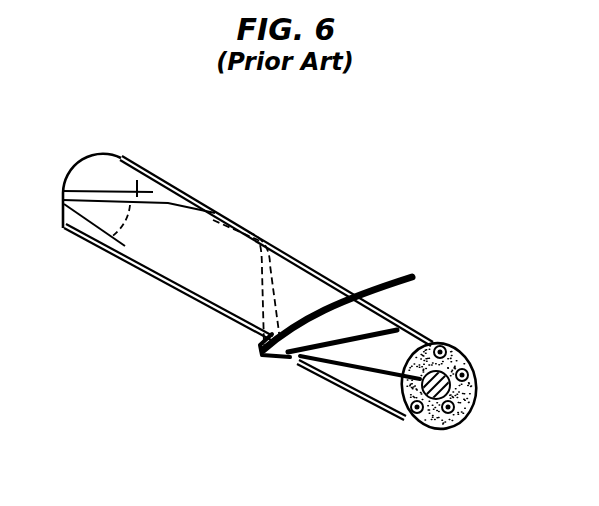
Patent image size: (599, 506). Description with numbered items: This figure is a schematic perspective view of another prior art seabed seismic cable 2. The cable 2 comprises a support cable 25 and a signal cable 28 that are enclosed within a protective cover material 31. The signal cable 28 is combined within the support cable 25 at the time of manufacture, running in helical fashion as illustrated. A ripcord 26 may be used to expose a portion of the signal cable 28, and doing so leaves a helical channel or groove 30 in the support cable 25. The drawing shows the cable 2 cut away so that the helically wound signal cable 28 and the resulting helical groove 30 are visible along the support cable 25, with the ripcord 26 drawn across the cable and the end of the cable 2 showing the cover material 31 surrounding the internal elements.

The cable 2 is at (222, 178).
The support cable 25 is at (467, 402).
The ripcord 26 is at (377, 280).
The signal cable 28 is at (323, 362).
The helical channel or groove 30 is at (301, 262).
The protective cover material 31 is at (471, 352).